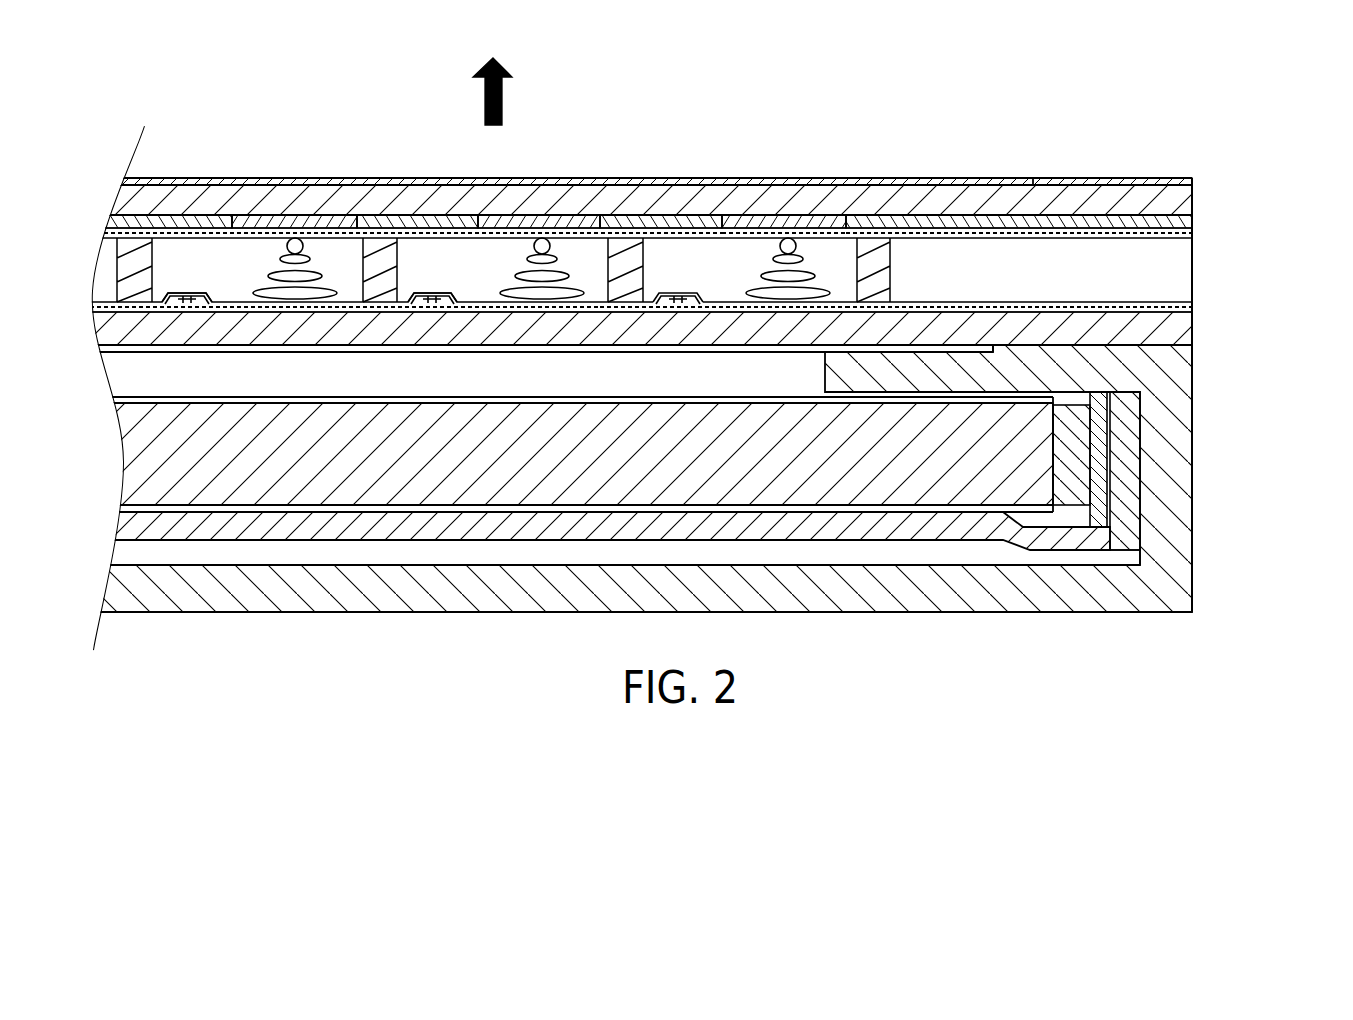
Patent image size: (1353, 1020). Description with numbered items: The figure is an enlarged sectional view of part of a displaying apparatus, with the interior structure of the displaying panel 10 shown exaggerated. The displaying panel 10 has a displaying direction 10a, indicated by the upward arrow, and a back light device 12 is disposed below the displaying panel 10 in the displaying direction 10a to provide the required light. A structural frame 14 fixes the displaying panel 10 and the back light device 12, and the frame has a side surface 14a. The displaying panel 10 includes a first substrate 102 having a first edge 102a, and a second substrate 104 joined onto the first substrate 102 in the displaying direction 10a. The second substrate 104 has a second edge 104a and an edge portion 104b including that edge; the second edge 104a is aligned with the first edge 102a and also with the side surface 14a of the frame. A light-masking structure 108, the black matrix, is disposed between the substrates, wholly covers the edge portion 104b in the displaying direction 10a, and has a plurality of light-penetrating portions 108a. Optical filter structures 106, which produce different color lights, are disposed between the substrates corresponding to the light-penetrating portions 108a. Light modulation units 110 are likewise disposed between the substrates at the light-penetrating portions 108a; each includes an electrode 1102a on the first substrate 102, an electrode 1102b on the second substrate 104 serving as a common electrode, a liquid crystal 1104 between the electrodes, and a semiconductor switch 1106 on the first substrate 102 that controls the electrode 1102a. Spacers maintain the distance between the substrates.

The displaying panel 10 is at (1288, 175).
The displaying direction 10a is at (487, 97).
The back light device 12 is at (975, 554).
The structural frame 14 is at (1172, 508).
The side surface 14a is at (1203, 441).
The first substrate 102 is at (1163, 330).
The first edge 102a is at (1201, 335).
The second substrate 104 is at (940, 202).
The second edge 104a is at (1199, 194).
The edge portion 104b is at (1192, 175).
The optical filter structure 106 is at (558, 222).
The light-masking structure 108 is at (980, 220).
The light-penetrating portions 108a is at (850, 222).
The light modulation units 110 is at (815, 110).
The electrode 1102a is at (707, 300).
The electrode 1102b is at (760, 255).
The liquid crystal 1104 is at (745, 233).
The semiconductor switch 1106 is at (663, 290).